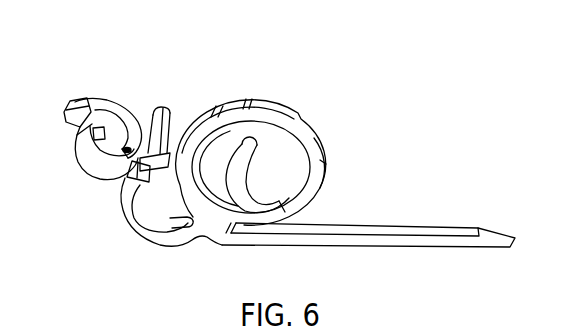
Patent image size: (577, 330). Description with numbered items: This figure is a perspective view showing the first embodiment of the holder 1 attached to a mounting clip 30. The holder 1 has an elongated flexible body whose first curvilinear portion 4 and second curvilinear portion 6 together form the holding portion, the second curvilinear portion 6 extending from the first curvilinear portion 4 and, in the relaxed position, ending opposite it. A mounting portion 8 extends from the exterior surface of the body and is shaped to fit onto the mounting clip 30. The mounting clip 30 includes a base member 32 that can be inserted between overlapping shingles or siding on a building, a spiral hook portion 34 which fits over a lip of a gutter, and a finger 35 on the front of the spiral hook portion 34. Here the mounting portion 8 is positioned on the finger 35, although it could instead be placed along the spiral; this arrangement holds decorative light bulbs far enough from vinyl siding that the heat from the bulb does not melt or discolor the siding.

The holder 1 is at (117, 149).
The first curvilinear portion 4 is at (103, 163).
The second curvilinear portion 6 is at (113, 90).
The mounting portion 8 is at (143, 170).
The mounting clip 30 is at (293, 99).
The base member 32 is at (427, 242).
The spiral hook portion 34 is at (313, 138).
The finger 35 is at (125, 210).